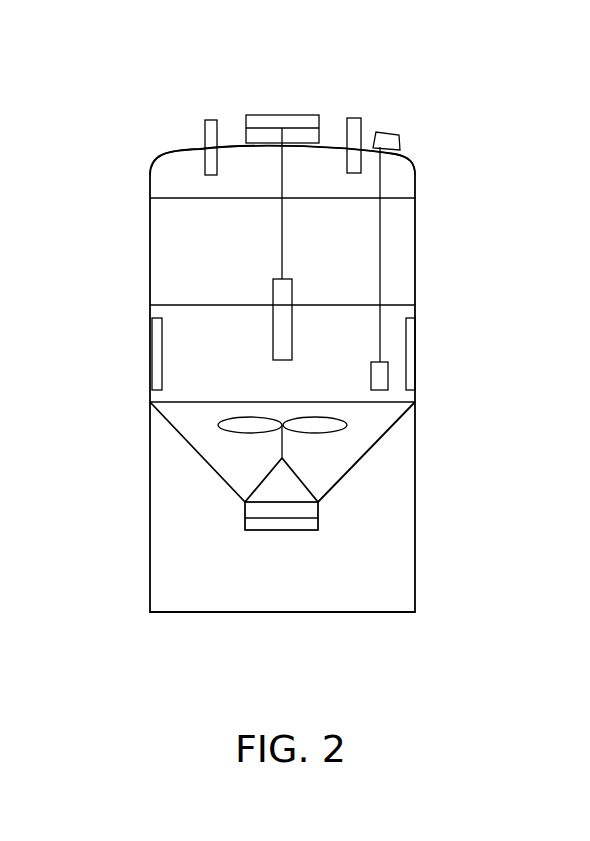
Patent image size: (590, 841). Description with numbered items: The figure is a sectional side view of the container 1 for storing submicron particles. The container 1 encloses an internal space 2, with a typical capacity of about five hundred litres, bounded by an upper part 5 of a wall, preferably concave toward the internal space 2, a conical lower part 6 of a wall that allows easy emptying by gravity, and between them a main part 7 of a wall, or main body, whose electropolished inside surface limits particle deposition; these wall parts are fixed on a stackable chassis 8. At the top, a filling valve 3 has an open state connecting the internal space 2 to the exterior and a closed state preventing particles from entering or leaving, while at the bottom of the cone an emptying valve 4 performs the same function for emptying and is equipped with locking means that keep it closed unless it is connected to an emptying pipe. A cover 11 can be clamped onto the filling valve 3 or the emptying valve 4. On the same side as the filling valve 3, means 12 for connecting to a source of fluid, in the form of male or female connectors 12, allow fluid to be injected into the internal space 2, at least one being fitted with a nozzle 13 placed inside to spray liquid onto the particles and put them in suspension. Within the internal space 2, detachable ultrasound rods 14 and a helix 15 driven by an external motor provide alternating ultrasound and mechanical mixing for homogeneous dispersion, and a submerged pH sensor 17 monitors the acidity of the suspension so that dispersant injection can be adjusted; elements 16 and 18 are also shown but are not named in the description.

The container 1 is at (508, 122).
The internal space 2 is at (177, 373).
The filling valve 3 is at (313, 137).
The emptying valve 4 is at (310, 511).
The upper part of a wall 5 is at (158, 185).
The lower part of a wall 6 is at (200, 453).
The main part of a wall 7 is at (435, 200).
The stackable chassis 8 is at (150, 590).
The cover 11 is at (260, 122).
The means for connecting to a source of fluid 12 is at (206, 128).
The nozzle 13 is at (210, 160).
The ultrasound rods 14 is at (282, 316).
The helix 15 is at (318, 433).
The heating element 16 is at (156, 355).
The pH sensor 17 is at (382, 380).
The inlet 18 is at (400, 140).